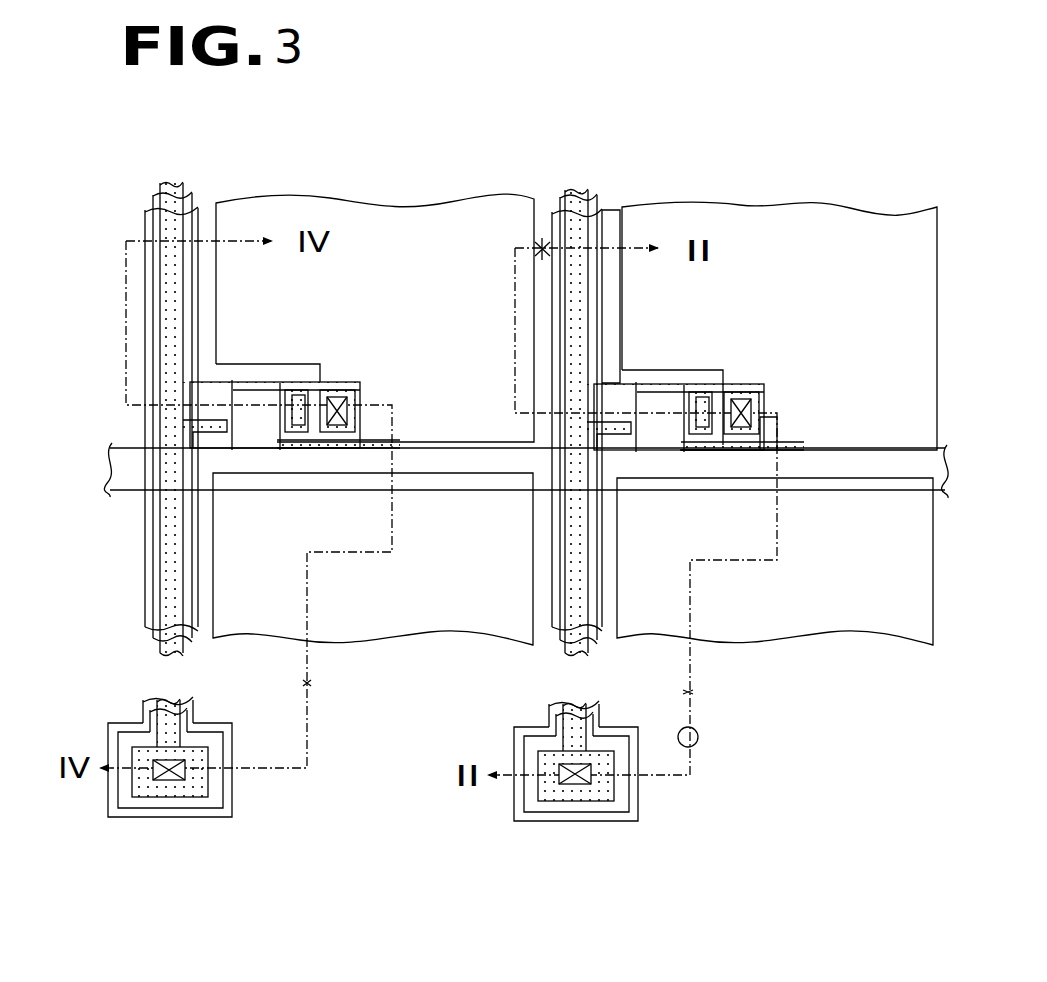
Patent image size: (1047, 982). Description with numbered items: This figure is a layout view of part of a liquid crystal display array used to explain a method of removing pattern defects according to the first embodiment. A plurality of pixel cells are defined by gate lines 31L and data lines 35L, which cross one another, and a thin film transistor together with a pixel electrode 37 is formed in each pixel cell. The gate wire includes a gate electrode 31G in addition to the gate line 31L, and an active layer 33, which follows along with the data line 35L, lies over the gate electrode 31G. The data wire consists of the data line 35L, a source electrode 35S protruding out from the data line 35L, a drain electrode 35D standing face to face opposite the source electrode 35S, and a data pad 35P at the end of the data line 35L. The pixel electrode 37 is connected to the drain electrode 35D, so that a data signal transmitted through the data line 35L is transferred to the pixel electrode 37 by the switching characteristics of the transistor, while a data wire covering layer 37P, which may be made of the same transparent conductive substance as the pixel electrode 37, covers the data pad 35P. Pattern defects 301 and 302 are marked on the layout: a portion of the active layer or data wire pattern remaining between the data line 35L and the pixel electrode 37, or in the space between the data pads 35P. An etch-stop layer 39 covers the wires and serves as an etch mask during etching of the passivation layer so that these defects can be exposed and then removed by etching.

The gate line 31L is at (950, 450).
The gate electrode 31G is at (680, 372).
The active layer 33 is at (570, 190).
The data line 35L is at (600, 202).
The source electrode 35S is at (615, 385).
The drain electrode 35D is at (760, 388).
The data pad 35P is at (582, 803).
The pixel electrode 37 is at (395, 195).
The data wire covering layer 37P is at (620, 818).
The etch-stop layer 39 is at (603, 238).
The pattern defect 301 is at (538, 250).
The pattern defect 302 is at (698, 731).